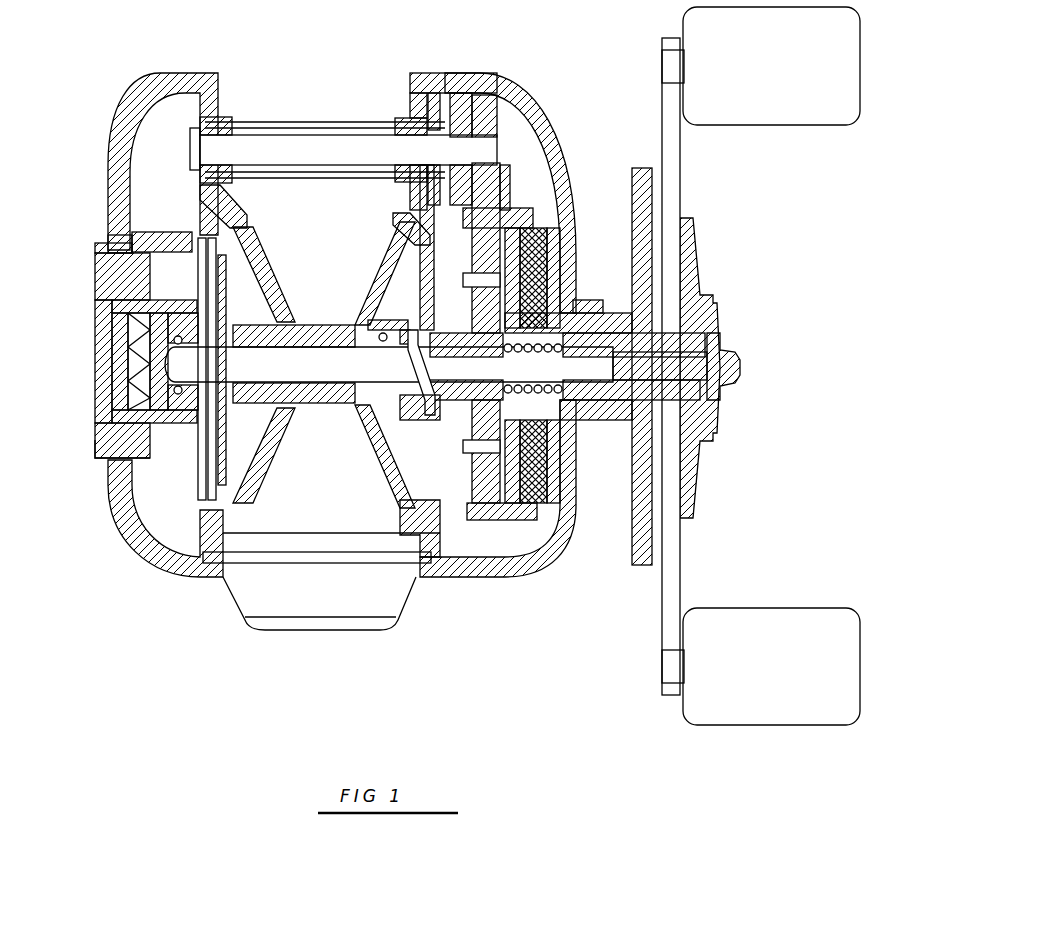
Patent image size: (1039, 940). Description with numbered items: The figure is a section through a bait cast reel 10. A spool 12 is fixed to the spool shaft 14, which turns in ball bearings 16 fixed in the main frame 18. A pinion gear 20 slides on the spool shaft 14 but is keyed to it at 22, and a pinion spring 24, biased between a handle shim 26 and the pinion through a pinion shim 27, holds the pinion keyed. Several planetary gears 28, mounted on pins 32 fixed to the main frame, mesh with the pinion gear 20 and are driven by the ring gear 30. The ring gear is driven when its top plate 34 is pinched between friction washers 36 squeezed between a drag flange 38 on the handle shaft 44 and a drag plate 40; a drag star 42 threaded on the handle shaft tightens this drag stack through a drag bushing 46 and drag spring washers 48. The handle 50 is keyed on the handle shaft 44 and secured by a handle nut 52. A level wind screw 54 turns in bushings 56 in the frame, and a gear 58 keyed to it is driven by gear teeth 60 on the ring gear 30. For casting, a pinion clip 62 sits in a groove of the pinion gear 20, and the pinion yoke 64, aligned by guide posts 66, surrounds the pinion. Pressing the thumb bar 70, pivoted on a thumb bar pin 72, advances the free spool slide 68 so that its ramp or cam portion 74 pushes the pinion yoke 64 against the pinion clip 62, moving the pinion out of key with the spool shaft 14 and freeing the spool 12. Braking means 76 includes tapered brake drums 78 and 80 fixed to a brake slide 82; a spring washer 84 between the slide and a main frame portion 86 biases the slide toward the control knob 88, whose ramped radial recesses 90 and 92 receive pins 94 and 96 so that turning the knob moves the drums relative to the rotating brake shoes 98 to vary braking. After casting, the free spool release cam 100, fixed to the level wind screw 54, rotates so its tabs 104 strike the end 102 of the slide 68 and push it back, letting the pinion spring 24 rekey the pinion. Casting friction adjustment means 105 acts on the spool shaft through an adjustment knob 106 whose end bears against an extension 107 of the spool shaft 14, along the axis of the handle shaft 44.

The bait cast reel 10 is at (359, 365).
The spool 12 is at (273, 425).
The spool shaft 14 is at (290, 388).
The ball bearings 16 is at (365, 350).
The main frame 18 is at (225, 205).
The pinion gear 20 is at (420, 418).
The key 22 is at (428, 350).
The pinion spring 24 is at (520, 425).
The handle shim 26 is at (566, 395).
The pinion shim 27 is at (572, 290).
The planetary gears 28 is at (485, 255).
The ring gear 30 is at (513, 210).
The pins 32 is at (483, 452).
The top plate 34 is at (556, 480).
The friction washers 36 is at (556, 520).
The drag flange 38 is at (508, 512).
The drag plate 40 is at (535, 470).
The drag star 42 is at (637, 560).
The handle shaft 44 is at (695, 425).
The drag bushing 46 is at (585, 318).
The drag spring washers 48 is at (580, 302).
The handle 50 is at (672, 568).
The handle nut 52 is at (705, 398).
The level wind screw 54 is at (345, 135).
The bushings 56 is at (225, 125).
The gear 58 is at (492, 115).
The gear teeth 60 is at (505, 200).
The pinion clip 62 is at (405, 325).
The pinion yoke 64 is at (424, 290).
The guide posts 66 is at (392, 255).
The free spool slide 68 is at (380, 445).
The thumb bar 70 is at (343, 604).
The thumb bar pin 72 is at (398, 558).
The ramp or cam portion 74 is at (408, 370).
The braking means 76 is at (127, 381).
The tapered brake drum 78 is at (180, 232).
The tapered brake drum 80 is at (110, 303).
The brake slide 82 is at (118, 348).
The spring washer 84 is at (138, 360).
The main frame portion 86 is at (155, 395).
The control knob 88 is at (105, 460).
The ramped radial recess 90 is at (112, 238).
The ramped radial recess 92 is at (130, 259).
The pin 94 is at (120, 252).
The pin 96 is at (108, 443).
The brake shoes 98 is at (203, 445).
The free spool release cam 100 is at (452, 95).
The end of free spool slide 102 is at (422, 222).
The tabs 104 is at (434, 93).
The casting friction adjustment means 105 is at (684, 329).
The adjustment knob 106 is at (735, 366).
The extension of spool shaft 107 is at (655, 345).